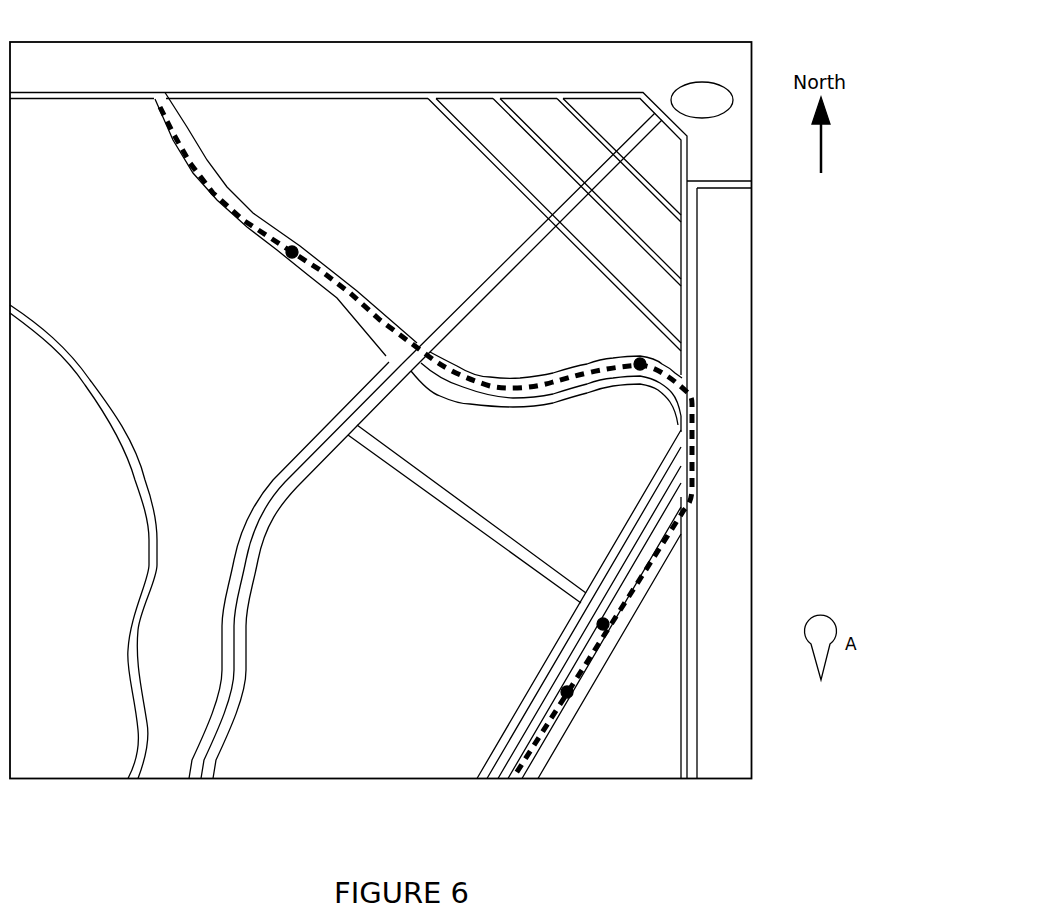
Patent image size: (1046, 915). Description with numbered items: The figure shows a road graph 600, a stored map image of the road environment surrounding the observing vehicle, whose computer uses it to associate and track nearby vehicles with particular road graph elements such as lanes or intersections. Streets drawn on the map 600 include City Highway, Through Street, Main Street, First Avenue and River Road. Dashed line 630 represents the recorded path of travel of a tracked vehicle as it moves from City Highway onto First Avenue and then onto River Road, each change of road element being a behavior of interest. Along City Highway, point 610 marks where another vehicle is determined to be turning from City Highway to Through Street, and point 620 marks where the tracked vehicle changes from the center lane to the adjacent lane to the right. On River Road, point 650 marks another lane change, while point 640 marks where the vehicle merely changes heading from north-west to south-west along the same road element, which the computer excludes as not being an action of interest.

The road graph 600 is at (52, 24).
The point 610 is at (601, 619).
The point 620 is at (565, 690).
The dashed line 630 is at (213, 195).
The point 640 is at (640, 358).
The point 650 is at (292, 246).